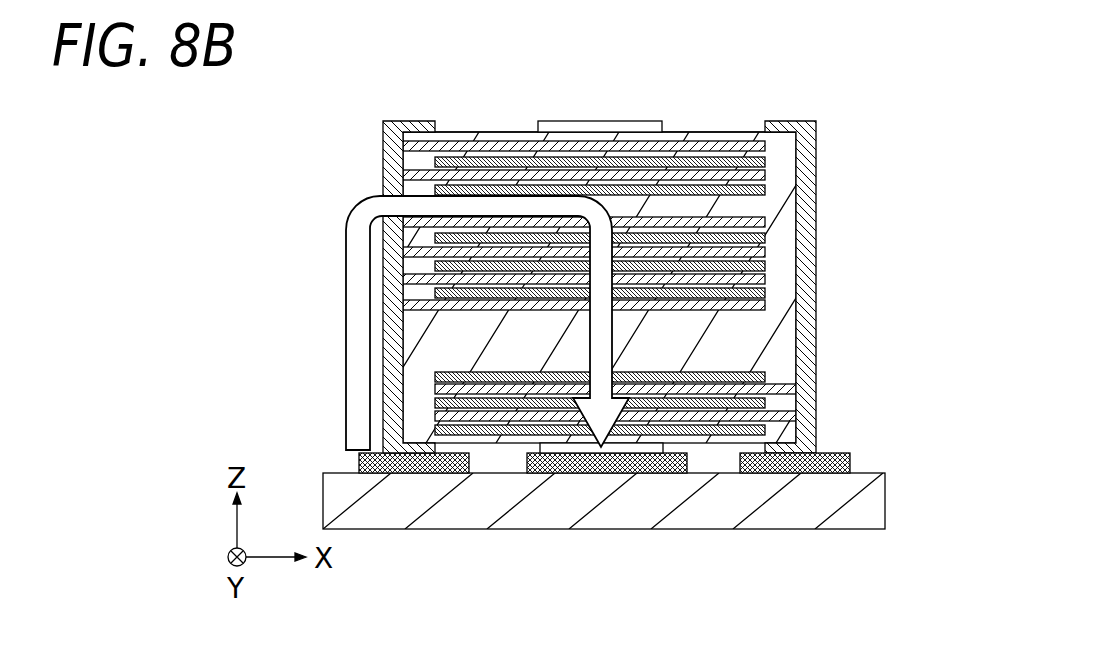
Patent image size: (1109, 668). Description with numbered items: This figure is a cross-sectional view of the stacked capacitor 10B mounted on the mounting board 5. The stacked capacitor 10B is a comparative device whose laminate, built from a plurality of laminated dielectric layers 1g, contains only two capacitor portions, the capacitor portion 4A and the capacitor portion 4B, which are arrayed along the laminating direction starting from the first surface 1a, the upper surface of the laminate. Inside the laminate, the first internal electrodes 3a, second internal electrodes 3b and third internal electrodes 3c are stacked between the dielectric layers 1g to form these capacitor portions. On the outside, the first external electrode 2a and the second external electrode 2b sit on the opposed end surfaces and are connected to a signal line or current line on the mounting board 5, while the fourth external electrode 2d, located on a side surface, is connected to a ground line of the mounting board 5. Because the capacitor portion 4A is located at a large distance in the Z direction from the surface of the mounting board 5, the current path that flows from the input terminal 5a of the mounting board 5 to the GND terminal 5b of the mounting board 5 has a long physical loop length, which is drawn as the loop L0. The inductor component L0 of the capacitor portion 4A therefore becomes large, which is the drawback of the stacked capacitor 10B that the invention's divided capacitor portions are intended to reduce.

The stacked capacitor 10B is at (614, 291).
The dielectric layers 1g is at (478, 133).
The first surface 1a is at (690, 132).
The first external electrode 2a is at (392, 122).
The second external electrode 2b is at (814, 122).
The fourth external electrode 2d is at (575, 122).
The first internal electrodes 3a is at (385, 137).
The second internal electrodes 3b is at (402, 185).
The third internal electrodes 3c is at (832, 440).
The capacitor portion 4A is at (596, 182).
The capacitor portion 4B is at (668, 378).
The mounting board 5 is at (845, 492).
The input terminal 5a is at (395, 478).
The GND terminal 5b is at (590, 488).
The inductor component L0 is at (349, 303).